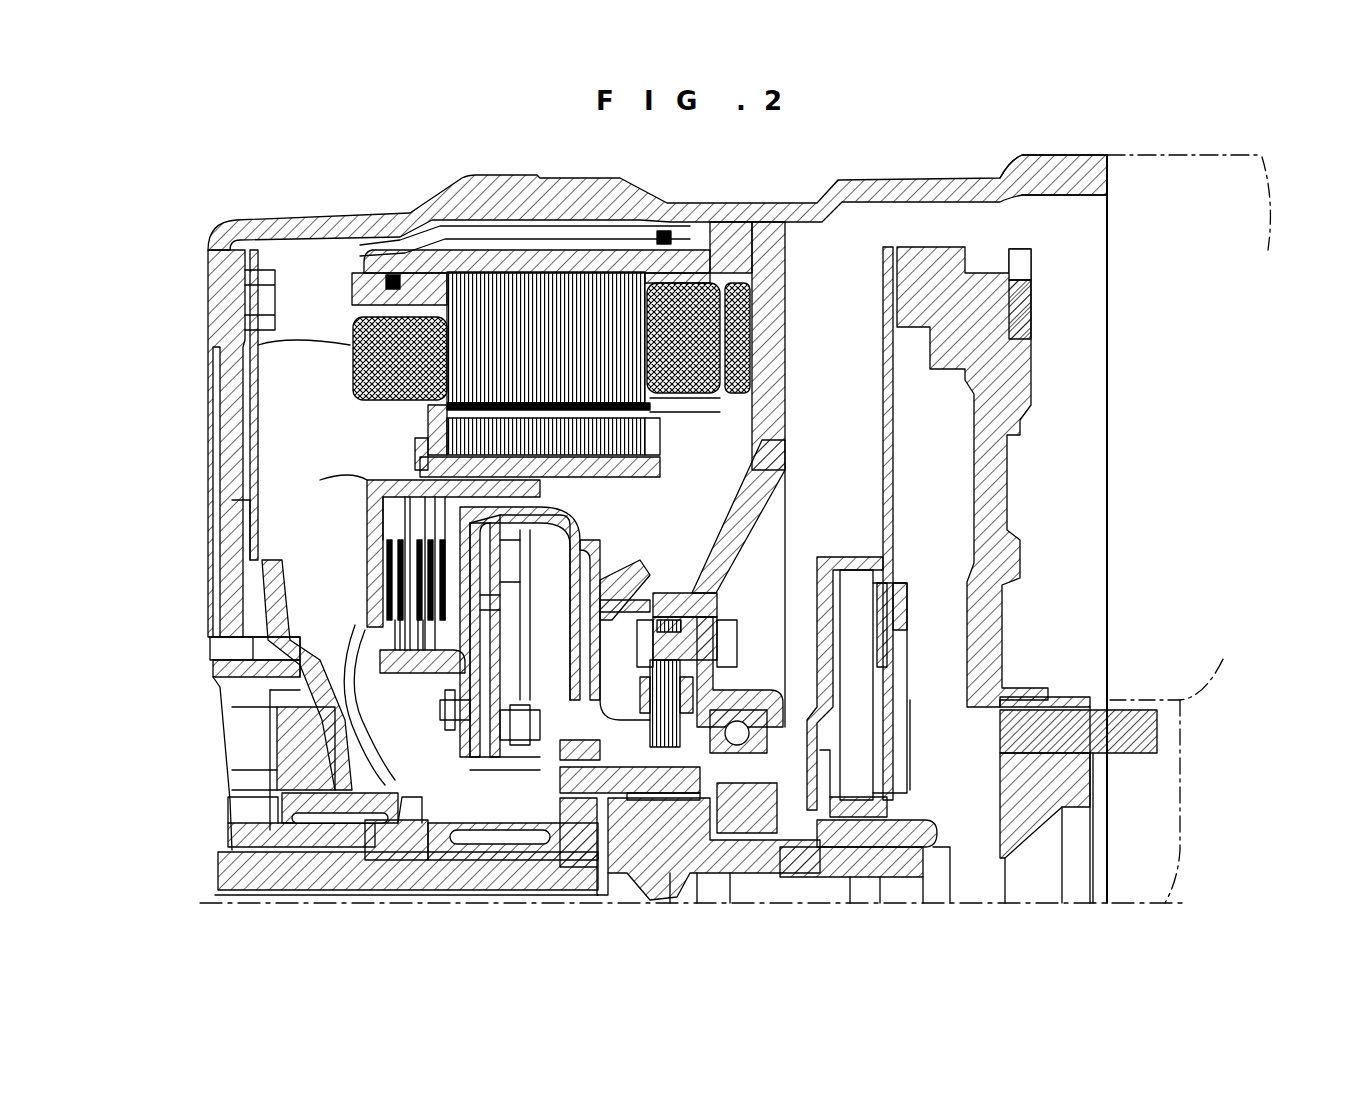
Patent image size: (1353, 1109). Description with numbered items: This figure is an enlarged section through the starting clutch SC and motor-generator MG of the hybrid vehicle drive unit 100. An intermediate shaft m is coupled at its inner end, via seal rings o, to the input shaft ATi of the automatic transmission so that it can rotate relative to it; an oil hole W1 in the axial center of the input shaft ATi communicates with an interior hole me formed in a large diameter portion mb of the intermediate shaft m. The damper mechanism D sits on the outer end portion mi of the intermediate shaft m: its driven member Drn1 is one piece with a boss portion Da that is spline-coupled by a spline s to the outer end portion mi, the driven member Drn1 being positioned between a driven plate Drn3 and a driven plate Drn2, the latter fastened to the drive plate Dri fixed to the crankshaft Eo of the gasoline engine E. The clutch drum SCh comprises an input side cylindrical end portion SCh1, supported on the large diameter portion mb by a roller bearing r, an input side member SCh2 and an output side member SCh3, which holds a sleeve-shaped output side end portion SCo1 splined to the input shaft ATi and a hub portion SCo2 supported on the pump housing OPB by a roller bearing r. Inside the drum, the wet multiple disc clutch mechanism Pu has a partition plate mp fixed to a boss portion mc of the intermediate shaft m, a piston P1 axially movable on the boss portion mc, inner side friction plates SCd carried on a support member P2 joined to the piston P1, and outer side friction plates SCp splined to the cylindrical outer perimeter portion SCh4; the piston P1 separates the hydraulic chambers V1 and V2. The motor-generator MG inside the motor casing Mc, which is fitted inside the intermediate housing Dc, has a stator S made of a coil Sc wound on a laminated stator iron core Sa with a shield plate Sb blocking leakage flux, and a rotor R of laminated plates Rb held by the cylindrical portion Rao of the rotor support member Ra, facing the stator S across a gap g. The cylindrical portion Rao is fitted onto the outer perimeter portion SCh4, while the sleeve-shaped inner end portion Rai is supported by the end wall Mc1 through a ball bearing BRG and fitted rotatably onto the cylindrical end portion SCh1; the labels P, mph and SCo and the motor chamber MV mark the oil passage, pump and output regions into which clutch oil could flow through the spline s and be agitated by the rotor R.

The hybrid vehicle drive unit 100 is at (178, 265).
The motor chamber MV is at (330, 345).
The stator iron core Sa is at (500, 300).
The stator S is at (572, 264).
The motor casing Mc is at (612, 238).
The coil Sc is at (697, 290).
The intermediate housing Dc is at (1000, 176).
The gasoline engine E is at (1215, 152).
The damper mechanism D is at (1062, 296).
The driven plate Drn2 is at (890, 250).
The shield plate Sb is at (752, 308).
The end wall of the motor casing Mc1 is at (772, 408).
The gap g is at (696, 405).
The motor-generator MG is at (300, 420).
The rotor R is at (430, 410).
The laminated plates Rb is at (480, 446).
The cylindrical portion of the rotor support member Rao is at (775, 470).
The rotor support member Ra is at (640, 472).
The starting clutch SC is at (305, 490).
The cylindrical outer perimeter portion SCh4 is at (343, 493).
The spline s is at (370, 495).
The clutch drum SCh is at (355, 517).
The input side member SCh2 is at (605, 520).
The outer side friction plates SCp is at (395, 515).
The wet multiple disc clutch mechanism Pu is at (475, 540).
The pump housing mph is at (582, 553).
The driven plate Drn3 is at (838, 557).
The driven member Drn1 is at (867, 558).
The drive plate Dri is at (1012, 490).
The output side member SCh3 is at (386, 560).
The piston P1 is at (475, 584).
The partition plate mp is at (582, 592).
The inner side friction plates SCd is at (388, 645).
The ball bearing BRG is at (790, 705).
The sleeve-shaped inner end portion Rai is at (850, 760).
The hydraulic chamber V2 is at (285, 712).
The oil passage P is at (520, 636).
The hydraulic chamber V1 is at (520, 697).
The support member P2 is at (388, 690).
The crankshaft Eo is at (1181, 761).
The pump housing OPB is at (290, 760).
The hub portion SCo2 is at (280, 780).
The seal rings o is at (507, 728).
The roller bearing r is at (303, 920).
The oil hole W1 is at (215, 897).
The input shaft ATi is at (280, 872).
The clutch output hub SCo is at (400, 862).
The boss portion mc is at (425, 842).
The interior hole me is at (600, 900).
The large diameter portion mb is at (668, 890).
The input side cylindrical end portion SCh1 is at (700, 832).
The boss portion Da is at (868, 808).
The outer end portion mi is at (905, 870).
The intermediate shaft m is at (945, 875).
The output side end portion SCo1 is at (430, 855).